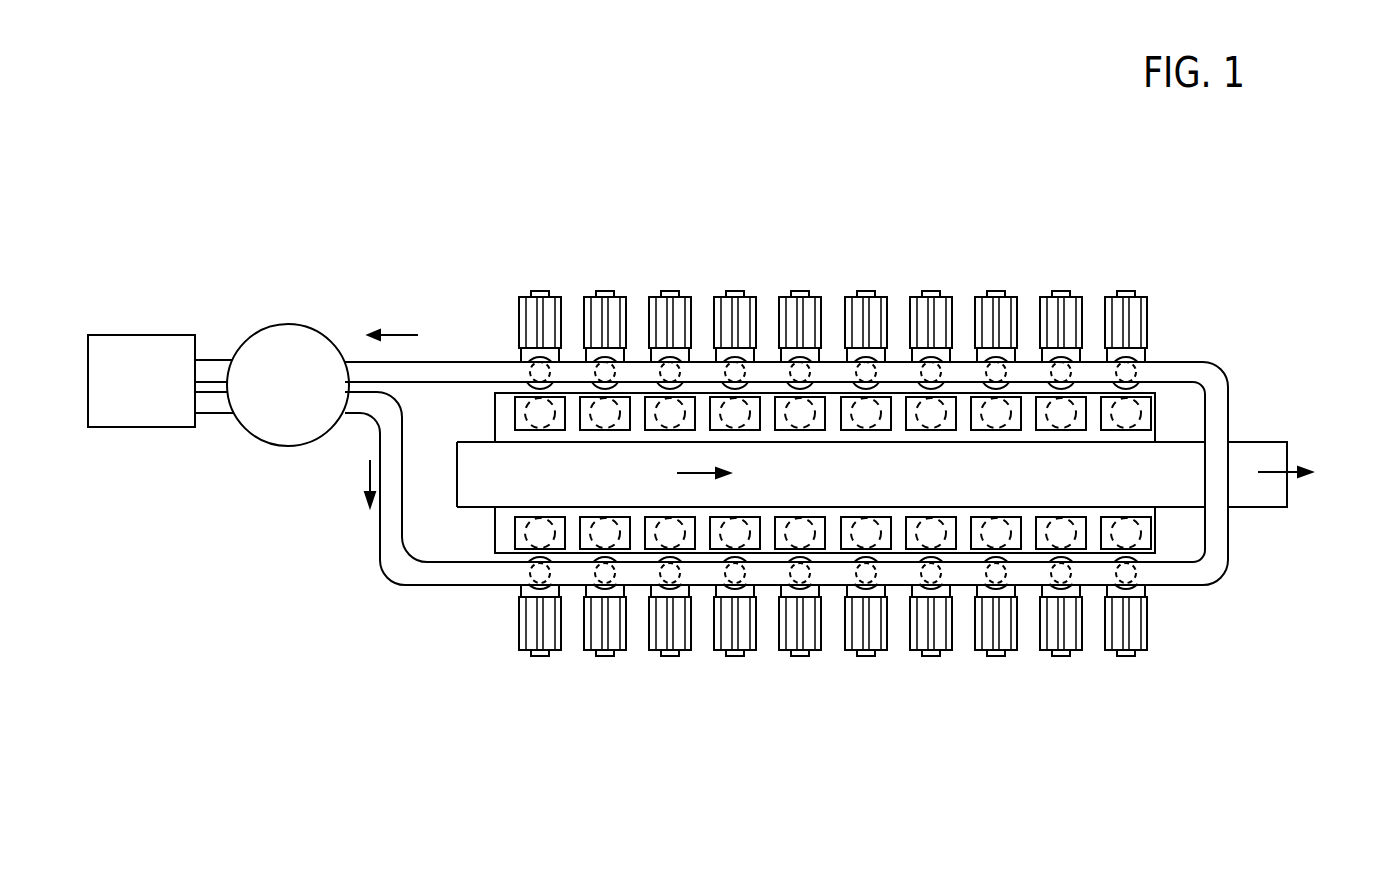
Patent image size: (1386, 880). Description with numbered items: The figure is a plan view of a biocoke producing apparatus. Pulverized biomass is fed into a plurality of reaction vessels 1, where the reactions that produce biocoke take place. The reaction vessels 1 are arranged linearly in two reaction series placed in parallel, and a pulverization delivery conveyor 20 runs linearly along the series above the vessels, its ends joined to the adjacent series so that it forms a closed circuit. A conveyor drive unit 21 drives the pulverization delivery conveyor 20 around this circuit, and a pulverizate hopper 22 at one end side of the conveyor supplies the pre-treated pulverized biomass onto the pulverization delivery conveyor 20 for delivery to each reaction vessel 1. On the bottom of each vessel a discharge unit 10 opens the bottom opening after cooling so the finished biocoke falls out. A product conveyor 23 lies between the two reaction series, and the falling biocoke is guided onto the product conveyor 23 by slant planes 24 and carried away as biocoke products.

The reaction vessel 1 is at (603, 290).
The discharge unit 10 is at (515, 540).
The pulverization delivery conveyor 20 is at (1172, 362).
The conveyor drive unit 21 is at (122, 335).
The pulverizate hopper 22 is at (284, 324).
The product conveyor 23 is at (1258, 442).
The slant plane 24 is at (1158, 404).